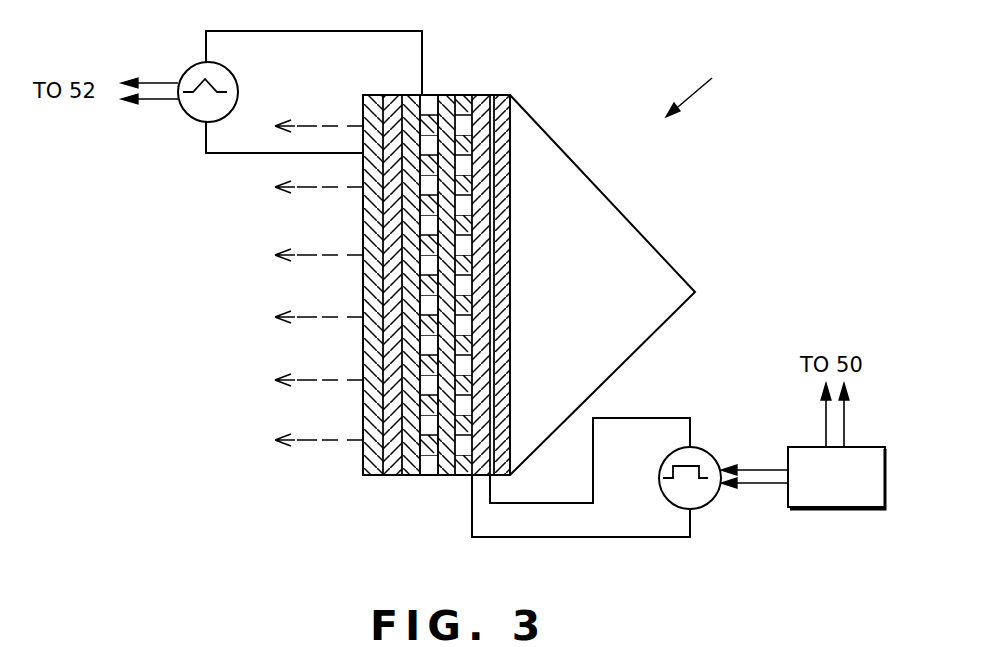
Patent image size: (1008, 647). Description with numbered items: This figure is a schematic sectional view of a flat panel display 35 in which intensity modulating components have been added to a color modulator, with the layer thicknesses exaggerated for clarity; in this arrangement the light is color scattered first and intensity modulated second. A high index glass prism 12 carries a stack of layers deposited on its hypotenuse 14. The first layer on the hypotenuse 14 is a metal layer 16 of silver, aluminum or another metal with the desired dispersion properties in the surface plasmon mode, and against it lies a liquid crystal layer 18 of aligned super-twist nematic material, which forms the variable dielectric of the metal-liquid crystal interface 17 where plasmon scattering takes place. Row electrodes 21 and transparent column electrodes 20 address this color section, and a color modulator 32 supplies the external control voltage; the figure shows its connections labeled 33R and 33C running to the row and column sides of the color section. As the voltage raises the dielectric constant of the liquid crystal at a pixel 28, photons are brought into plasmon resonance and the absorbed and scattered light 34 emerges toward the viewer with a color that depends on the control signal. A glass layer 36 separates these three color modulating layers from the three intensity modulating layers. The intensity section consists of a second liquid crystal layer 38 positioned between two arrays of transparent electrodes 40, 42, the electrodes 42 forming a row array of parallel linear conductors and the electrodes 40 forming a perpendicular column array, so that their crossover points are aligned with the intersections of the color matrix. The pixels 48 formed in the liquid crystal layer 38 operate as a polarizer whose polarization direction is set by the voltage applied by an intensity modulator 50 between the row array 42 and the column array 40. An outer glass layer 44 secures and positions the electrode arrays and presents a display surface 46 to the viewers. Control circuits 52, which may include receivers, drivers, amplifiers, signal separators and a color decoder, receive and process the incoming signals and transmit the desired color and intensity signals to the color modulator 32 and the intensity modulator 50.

The prism 12 is at (657, 253).
The hypotenuse 14 is at (510, 150).
The metal layer 16 is at (502, 96).
The metal-liquid crystal interface 17 is at (478, 478).
The liquid crystal layer 18 is at (483, 96).
The transparent column electrodes 20 is at (460, 478).
The row electrodes 21 is at (510, 433).
The pixel 28 is at (510, 113).
The color modulator 32 is at (717, 460).
The row conductor 33R is at (648, 418).
The column conductor 33C is at (578, 538).
The absorbed and scattered light 34 is at (308, 257).
The flat panel display 35 is at (705, 91).
The glass layer 36 is at (451, 96).
The liquid crystal layer 38 is at (412, 478).
The transparent electrodes 40 is at (433, 96).
The transparent electrodes 42 is at (396, 96).
The glass layer 44 is at (367, 478).
The display surface 46 is at (360, 461).
The pixels 48 is at (409, 96).
The intensity modulator 50 is at (180, 70).
The control circuits 52 is at (852, 492).